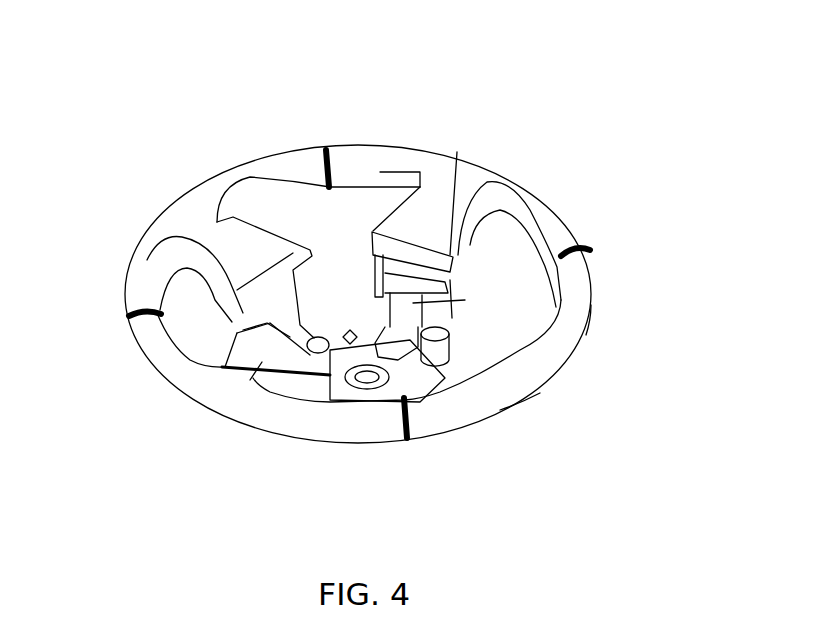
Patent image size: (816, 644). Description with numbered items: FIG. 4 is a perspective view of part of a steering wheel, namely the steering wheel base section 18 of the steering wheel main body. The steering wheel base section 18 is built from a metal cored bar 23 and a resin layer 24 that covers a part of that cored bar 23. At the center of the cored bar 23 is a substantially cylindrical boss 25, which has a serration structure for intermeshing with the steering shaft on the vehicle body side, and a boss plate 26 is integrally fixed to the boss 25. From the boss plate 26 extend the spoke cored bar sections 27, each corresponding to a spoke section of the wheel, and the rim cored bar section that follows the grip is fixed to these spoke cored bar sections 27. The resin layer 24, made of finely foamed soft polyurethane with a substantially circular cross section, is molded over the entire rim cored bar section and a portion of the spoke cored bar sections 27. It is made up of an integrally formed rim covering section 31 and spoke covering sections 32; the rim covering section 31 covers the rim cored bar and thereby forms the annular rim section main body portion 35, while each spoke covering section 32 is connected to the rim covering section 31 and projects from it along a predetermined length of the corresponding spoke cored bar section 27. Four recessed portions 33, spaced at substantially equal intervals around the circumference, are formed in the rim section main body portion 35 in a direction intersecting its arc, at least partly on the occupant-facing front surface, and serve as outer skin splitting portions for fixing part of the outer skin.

The steering wheel base section 18 is at (418, 84).
The cored bar 23 is at (427, 385).
The resin layer 24 is at (513, 378).
The boss 25 is at (362, 390).
The boss plate 26 is at (460, 377).
The spoke cored bar section 27 is at (463, 298).
The rim covering section 31 is at (543, 197).
The spoke covering section 32 is at (232, 245).
The recessed portion 33 is at (327, 152).
The rim section main body portion 35 is at (586, 327).